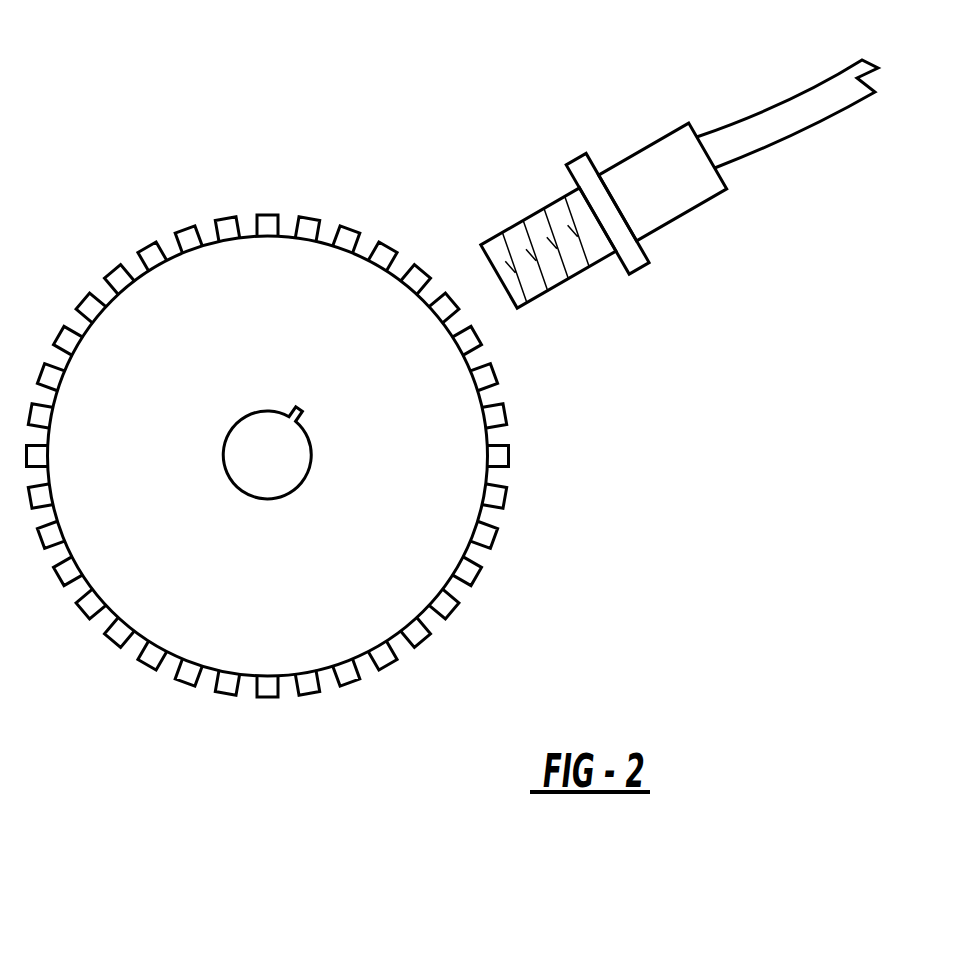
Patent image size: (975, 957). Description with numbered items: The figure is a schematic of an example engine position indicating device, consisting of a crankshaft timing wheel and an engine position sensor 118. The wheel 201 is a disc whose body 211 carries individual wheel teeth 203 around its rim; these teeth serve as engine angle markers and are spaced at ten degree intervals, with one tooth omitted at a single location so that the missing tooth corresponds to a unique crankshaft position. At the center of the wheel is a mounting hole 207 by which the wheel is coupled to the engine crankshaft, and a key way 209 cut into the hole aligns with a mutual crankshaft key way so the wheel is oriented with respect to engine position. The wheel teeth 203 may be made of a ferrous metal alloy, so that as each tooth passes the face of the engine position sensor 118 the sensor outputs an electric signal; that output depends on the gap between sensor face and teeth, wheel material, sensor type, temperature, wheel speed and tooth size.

The engine position sensor 118 is at (633, 153).
The toothed wheel 201 is at (268, 475).
The wheel teeth 203 is at (182, 228).
The mounting hole 207 is at (312, 431).
The key way 209 is at (298, 397).
The wheel body 211 is at (137, 238).